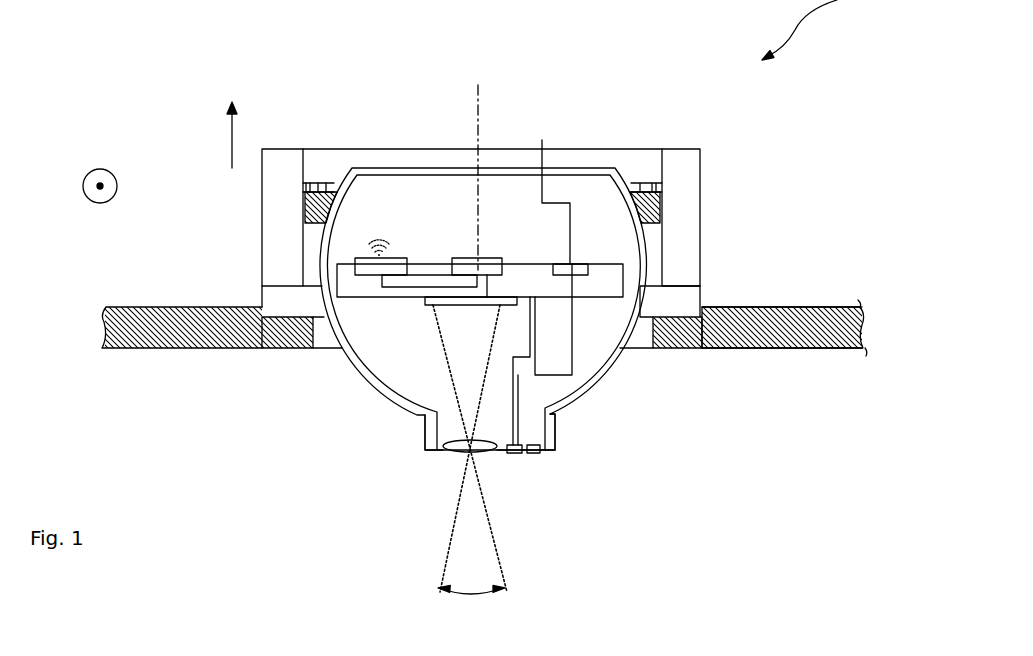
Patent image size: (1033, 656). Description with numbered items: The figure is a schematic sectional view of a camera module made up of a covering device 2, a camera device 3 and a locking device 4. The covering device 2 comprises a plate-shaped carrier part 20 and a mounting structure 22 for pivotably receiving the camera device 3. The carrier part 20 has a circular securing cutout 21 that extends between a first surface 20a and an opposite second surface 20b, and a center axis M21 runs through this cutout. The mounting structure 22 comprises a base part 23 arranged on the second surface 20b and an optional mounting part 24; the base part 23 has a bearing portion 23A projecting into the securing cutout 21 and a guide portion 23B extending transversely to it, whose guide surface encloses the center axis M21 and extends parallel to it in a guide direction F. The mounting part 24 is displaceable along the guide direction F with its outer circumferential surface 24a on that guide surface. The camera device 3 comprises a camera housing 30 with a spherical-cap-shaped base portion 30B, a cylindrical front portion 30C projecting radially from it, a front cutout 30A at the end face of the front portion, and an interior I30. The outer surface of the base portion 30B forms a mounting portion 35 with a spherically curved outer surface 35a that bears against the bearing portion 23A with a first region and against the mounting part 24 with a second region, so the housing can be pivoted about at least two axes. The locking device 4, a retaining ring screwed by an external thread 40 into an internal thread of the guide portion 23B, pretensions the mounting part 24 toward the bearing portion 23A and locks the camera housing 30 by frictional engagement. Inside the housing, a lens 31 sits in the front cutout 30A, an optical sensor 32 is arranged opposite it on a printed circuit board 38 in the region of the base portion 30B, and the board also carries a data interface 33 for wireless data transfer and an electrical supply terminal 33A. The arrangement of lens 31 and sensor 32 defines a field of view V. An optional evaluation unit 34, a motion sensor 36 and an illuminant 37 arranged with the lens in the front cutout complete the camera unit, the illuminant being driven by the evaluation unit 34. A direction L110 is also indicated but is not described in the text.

The longitudinal axis / direction L110 is at (100, 168).
The guide direction F is at (228, 143).
The covering device 2 is at (783, 388).
The camera device 3 is at (352, 418).
The locking device 4 is at (312, 185).
The carrier part 20 is at (808, 325).
The first surface 20a is at (808, 358).
The second surface 20b is at (767, 307).
The securing cutout 21 is at (650, 345).
The mounting structure 22 is at (235, 277).
The base part 23 is at (700, 244).
The bearing portion 23A is at (683, 348).
The guide portion 23B is at (272, 232).
The mounting part 24 is at (658, 212).
The outer circumferential surface 24a is at (298, 212).
The camera housing 30 is at (578, 398).
The front cutout 30A is at (433, 450).
The base portion 30B is at (600, 372).
The front portion 30C is at (553, 432).
The lens 31 is at (448, 455).
The optical sensor 32 is at (368, 370).
The data interface 33 is at (400, 258).
The electrical supply terminal 33A is at (588, 264).
The evaluation unit 34 is at (458, 262).
The mounting portion 35 is at (315, 295).
The spherically curved outer surface 35a is at (318, 318).
The motion sensor 36 is at (538, 455).
The illuminant 37 is at (514, 455).
The printed circuit board 38 is at (545, 263).
The external thread 40 is at (312, 183).
The interior I30 is at (398, 345).
The center axis M21 is at (480, 90).
The field of view V is at (500, 552).